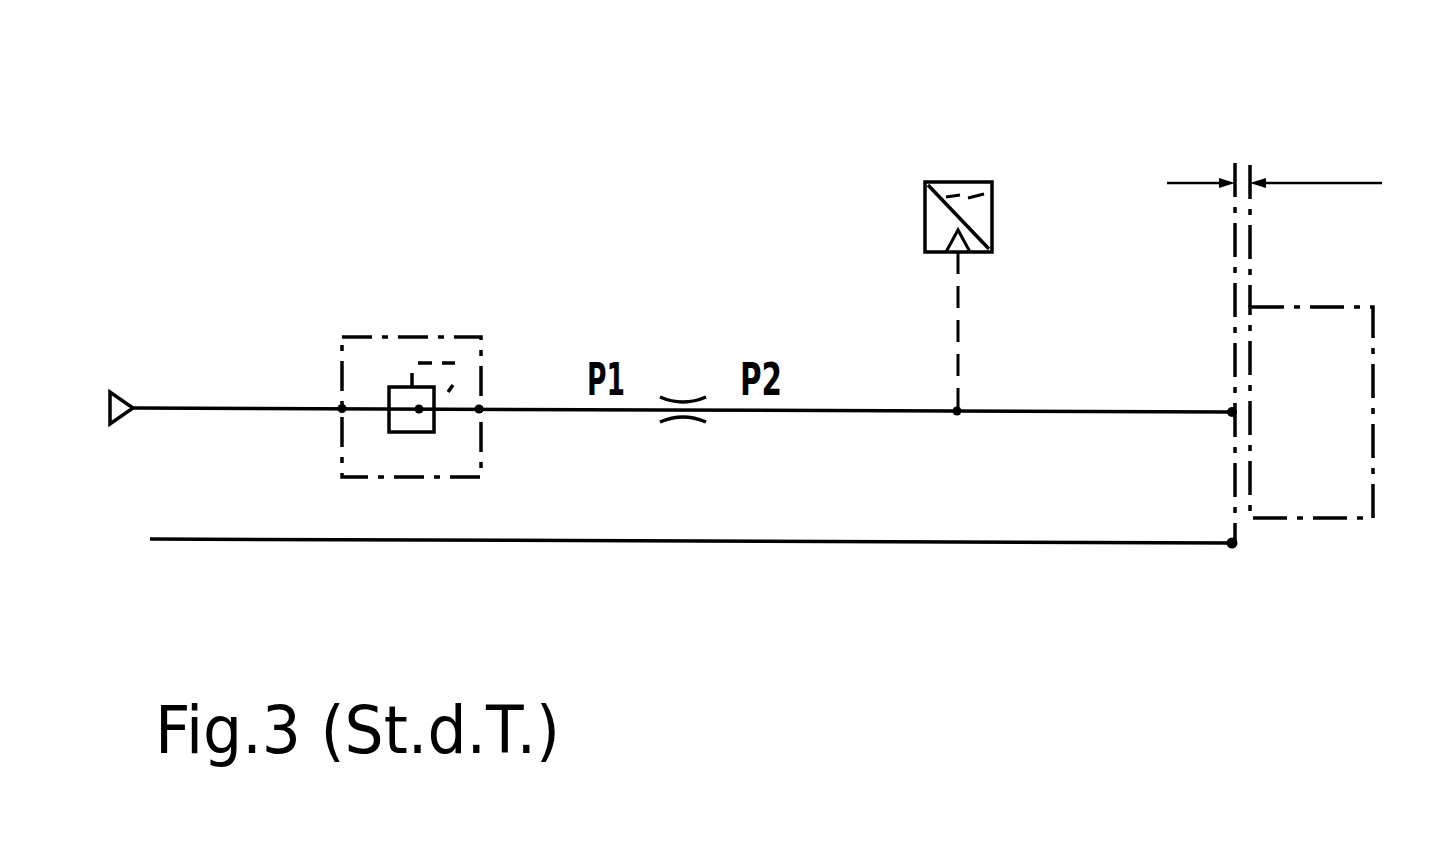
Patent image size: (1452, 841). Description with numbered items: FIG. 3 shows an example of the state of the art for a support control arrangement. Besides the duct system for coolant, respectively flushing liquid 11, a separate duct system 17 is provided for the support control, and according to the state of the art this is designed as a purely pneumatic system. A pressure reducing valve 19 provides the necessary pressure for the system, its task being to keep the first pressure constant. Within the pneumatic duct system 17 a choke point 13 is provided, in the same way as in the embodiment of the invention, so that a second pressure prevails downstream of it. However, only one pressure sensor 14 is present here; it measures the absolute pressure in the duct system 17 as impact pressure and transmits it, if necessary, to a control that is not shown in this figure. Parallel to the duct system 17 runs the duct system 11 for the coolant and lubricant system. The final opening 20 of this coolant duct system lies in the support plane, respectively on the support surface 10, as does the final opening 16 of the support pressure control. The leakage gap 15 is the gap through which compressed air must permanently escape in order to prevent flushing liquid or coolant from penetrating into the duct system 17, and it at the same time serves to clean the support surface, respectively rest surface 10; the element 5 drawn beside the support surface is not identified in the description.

The consumer / load unit 5 is at (1340, 441).
The support surface 10 is at (1230, 276).
The duct system for coolant, respectively flushing liquid 11 is at (855, 545).
The choke point 13 is at (690, 401).
The pressure sensor 14 is at (985, 216).
The leakage gap 15 is at (1248, 180).
The final opening of the support pressure control 16 is at (1228, 410).
The duct system for the support control 17 is at (838, 410).
The pressure reducing valve 19 is at (378, 362).
The final opening of the coolant duct system 20 is at (1234, 546).